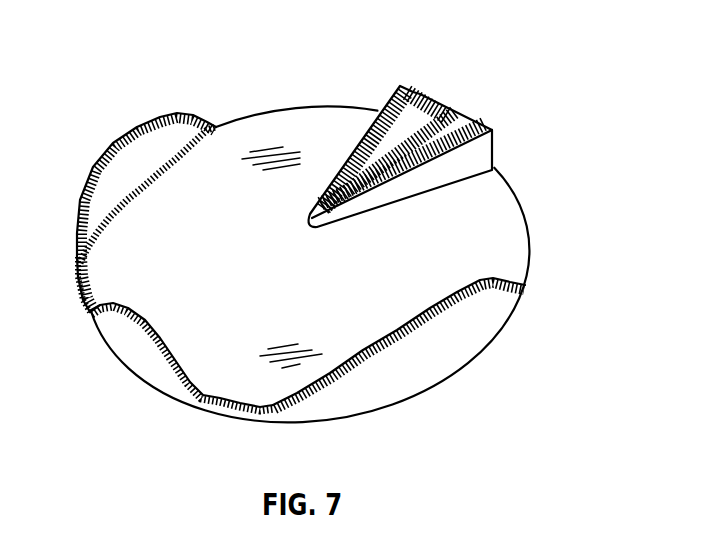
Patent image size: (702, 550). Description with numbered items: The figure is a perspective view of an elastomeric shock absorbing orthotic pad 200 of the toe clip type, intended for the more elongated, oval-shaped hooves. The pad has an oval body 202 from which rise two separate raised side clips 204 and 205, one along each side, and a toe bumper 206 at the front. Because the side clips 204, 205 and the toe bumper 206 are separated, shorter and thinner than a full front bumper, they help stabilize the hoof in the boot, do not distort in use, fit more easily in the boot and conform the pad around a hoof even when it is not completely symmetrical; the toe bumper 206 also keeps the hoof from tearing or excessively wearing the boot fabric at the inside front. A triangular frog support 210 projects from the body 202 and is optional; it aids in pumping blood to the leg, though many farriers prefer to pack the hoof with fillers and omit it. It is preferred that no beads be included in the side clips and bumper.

The elastomeric shock absorbing pad 200 is at (189, 47).
The body 202 is at (493, 223).
The side clip 204 is at (413, 333).
The side clip 205 is at (117, 147).
The toe bumper 206 is at (135, 335).
The triangular frog support 210 is at (447, 102).